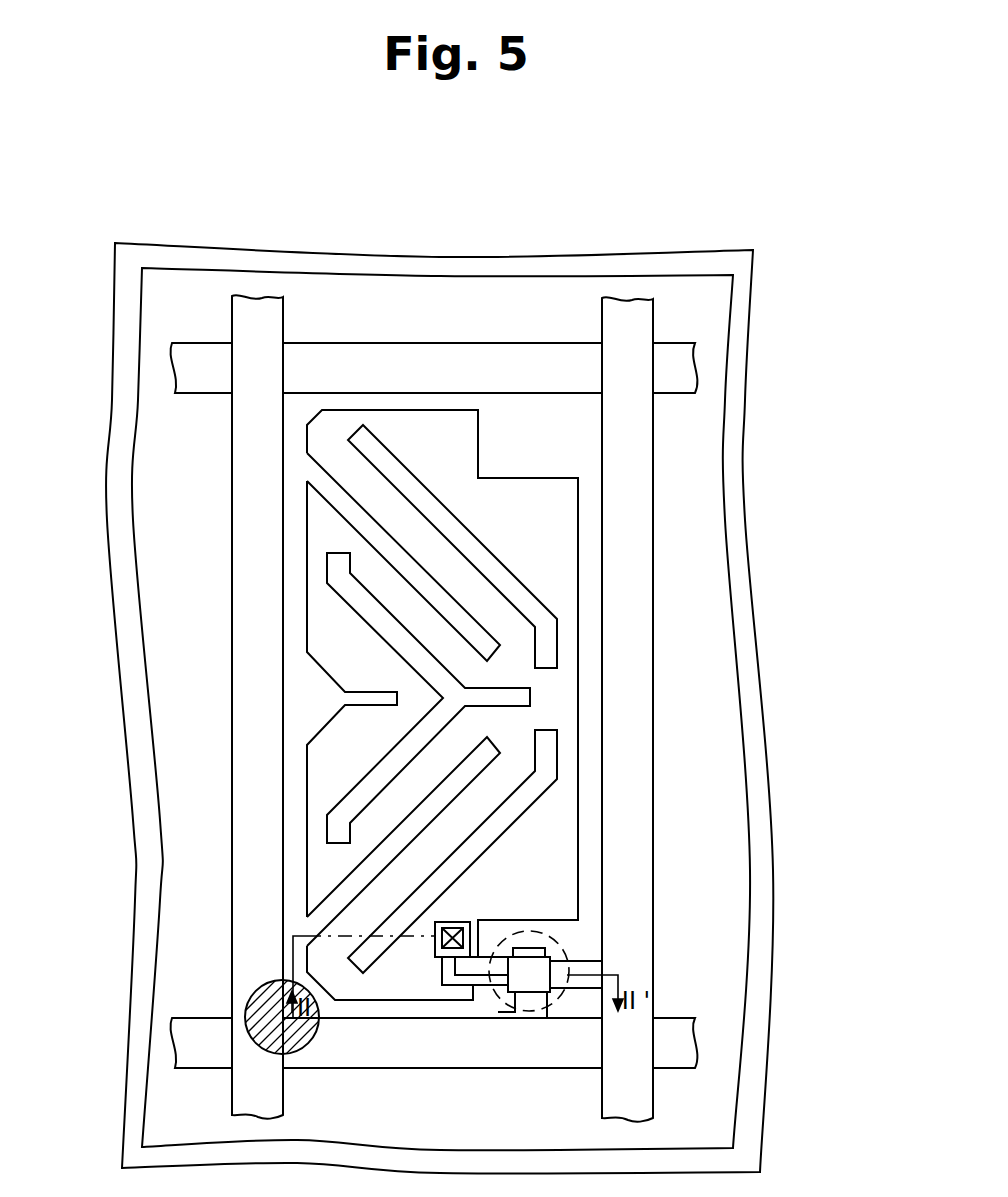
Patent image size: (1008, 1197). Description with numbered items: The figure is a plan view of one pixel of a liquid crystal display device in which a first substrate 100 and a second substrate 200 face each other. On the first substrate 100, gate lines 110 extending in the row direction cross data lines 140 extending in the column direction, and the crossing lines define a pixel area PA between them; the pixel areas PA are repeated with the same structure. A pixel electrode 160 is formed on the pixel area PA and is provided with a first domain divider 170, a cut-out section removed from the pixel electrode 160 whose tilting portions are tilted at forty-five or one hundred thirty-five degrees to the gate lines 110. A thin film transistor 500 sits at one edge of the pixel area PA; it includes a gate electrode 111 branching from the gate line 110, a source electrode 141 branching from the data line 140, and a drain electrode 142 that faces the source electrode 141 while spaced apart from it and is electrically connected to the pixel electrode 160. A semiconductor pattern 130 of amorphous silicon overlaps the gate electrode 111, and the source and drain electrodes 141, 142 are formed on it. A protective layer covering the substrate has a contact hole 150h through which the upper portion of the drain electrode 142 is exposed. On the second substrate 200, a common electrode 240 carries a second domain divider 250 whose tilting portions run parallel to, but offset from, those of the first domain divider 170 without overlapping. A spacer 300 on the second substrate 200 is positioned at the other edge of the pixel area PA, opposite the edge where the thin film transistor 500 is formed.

The first substrate 100 is at (730, 597).
The gate line 110 is at (693, 370).
The gate electrode 111 is at (515, 1005).
The semiconductor pattern 130 is at (528, 957).
The data line 140 is at (260, 297).
The source electrode 141 is at (580, 965).
The drain electrode 142 is at (498, 1012).
The contact hole 150h is at (456, 922).
The pixel electrode 160 is at (444, 643).
The first domain divider 170 is at (377, 540).
The second substrate 200 is at (768, 793).
The common electrode 240 is at (509, 709).
The second domain divider 250 is at (510, 583).
The spacer 300 is at (250, 993).
The thin film transistor 500 is at (530, 1010).
The pixel area PA is at (444, 643).